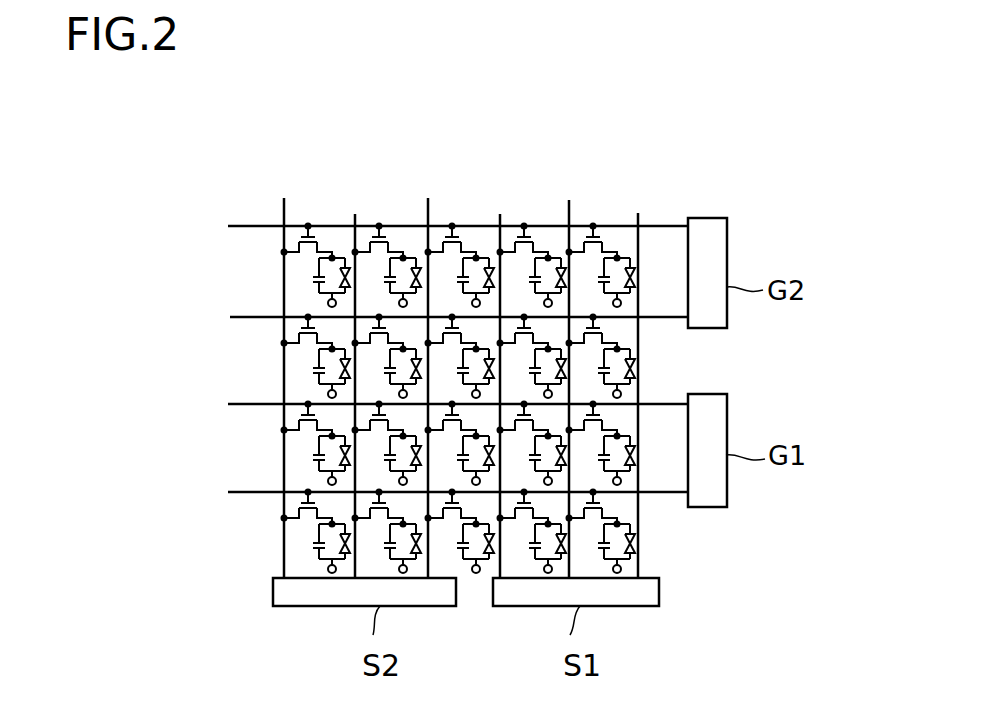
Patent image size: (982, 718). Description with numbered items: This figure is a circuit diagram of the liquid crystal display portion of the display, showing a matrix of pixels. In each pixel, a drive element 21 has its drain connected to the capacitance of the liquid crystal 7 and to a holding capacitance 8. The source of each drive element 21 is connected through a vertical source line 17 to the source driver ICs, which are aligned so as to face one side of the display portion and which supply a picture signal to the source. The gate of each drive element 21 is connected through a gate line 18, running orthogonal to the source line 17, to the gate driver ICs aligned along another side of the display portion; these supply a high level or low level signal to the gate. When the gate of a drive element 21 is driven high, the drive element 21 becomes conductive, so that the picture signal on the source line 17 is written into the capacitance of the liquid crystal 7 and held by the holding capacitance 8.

The liquid crystal 7 is at (345, 268).
The holding capacitance 8 is at (313, 283).
The source line 17 is at (285, 208).
The gate line 18 is at (246, 226).
The drive element 21 is at (297, 250).